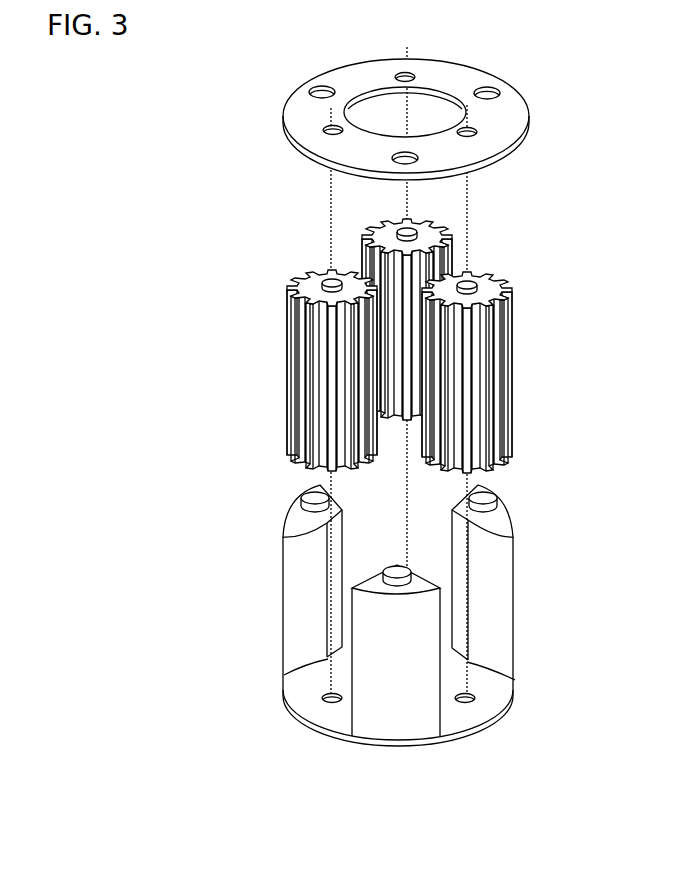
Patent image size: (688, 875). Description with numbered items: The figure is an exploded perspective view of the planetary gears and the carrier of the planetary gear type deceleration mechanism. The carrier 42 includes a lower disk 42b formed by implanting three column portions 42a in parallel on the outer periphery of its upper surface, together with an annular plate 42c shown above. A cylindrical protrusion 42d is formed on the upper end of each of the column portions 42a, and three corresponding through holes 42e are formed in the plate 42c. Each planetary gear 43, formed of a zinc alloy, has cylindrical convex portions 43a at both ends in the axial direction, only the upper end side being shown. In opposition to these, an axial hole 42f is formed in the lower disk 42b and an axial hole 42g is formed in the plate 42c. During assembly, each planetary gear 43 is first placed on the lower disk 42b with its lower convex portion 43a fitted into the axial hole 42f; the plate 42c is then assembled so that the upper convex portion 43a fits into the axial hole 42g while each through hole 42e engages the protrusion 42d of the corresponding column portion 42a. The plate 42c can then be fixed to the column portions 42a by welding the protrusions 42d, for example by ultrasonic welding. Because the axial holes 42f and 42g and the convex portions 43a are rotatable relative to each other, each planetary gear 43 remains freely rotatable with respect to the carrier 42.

The carrier 42 is at (388, 644).
The column portion 42a is at (302, 593).
The lower disk 42b is at (413, 710).
The annular plate 42c is at (387, 117).
The cylindrical protrusion 42d is at (310, 502).
The through hole 42e is at (308, 88).
The axial hole 42f is at (323, 702).
The axial hole 42g is at (413, 75).
The planetary gear 43 is at (407, 331).
The cylindrical convex portion 43a is at (553, 282).